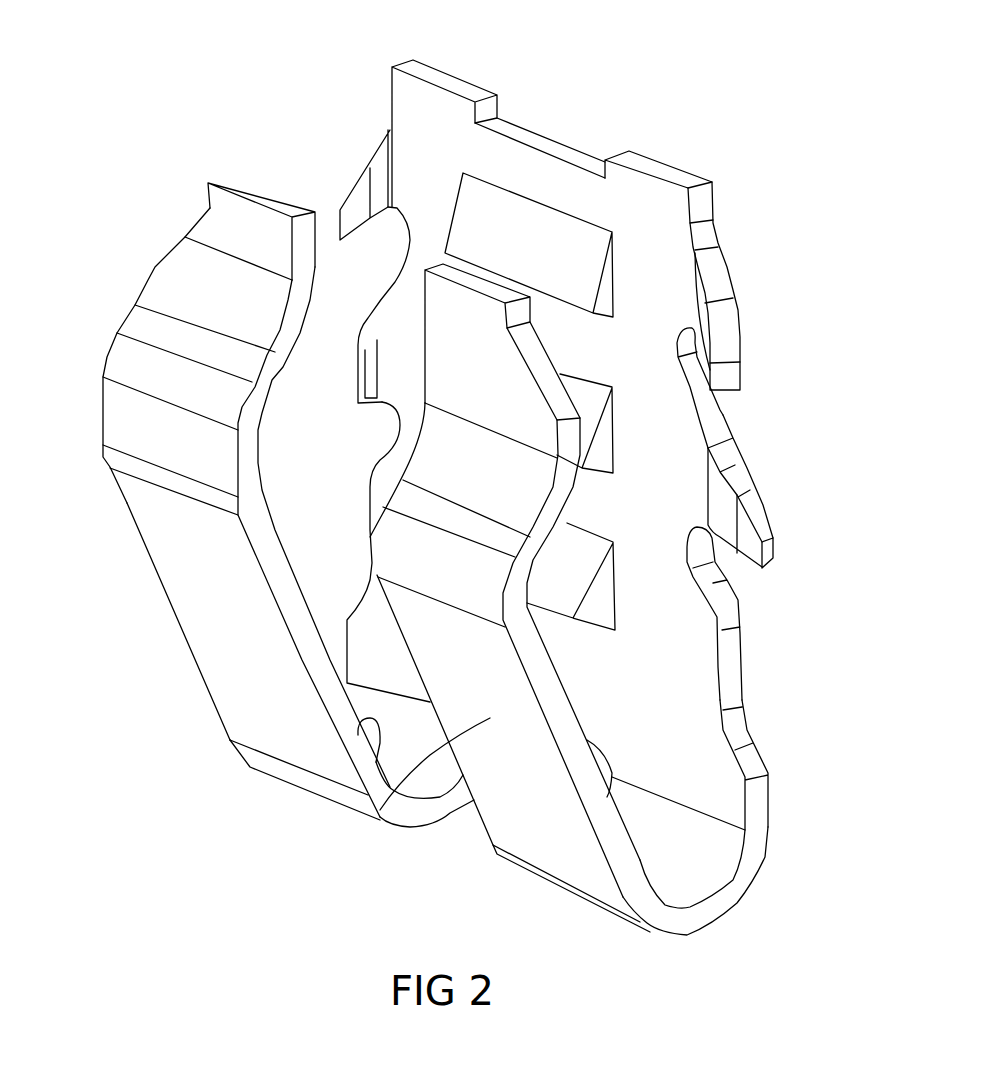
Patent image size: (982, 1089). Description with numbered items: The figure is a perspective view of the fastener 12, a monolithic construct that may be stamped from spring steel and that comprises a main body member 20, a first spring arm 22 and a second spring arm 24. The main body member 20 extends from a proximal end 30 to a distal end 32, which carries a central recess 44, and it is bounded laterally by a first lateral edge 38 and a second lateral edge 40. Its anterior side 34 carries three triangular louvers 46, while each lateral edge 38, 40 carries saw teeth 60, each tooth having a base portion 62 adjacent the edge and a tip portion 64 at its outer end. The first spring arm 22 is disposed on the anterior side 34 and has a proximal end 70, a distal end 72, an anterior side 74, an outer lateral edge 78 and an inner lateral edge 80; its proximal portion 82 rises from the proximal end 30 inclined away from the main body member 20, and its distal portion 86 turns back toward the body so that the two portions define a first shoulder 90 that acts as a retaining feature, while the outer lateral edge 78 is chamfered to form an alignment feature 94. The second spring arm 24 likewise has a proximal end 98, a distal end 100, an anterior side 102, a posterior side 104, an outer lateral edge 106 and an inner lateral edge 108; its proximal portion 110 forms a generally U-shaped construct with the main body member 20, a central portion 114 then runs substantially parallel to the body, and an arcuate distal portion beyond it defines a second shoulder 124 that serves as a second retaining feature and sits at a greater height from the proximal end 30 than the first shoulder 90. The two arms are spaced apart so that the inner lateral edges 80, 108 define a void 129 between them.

The fastener 12 is at (238, 97).
The main body member 20 is at (732, 203).
The first spring arm 22 is at (575, 850).
The second spring arm 24 is at (233, 625).
The proximal end 30 is at (690, 933).
The distal end 32 is at (660, 163).
The anterior side 34 is at (660, 623).
The first lateral edge 38 is at (733, 682).
The second lateral edge 40 is at (392, 82).
The recess 44 is at (583, 150).
The louvers 46 is at (607, 290).
The saw teeth 60 is at (350, 188).
The base portion 62 is at (727, 453).
The tip portion 64 is at (768, 548).
The proximal end 70 is at (683, 907).
The distal end 72 is at (480, 287).
The anterior side 74 is at (387, 810).
The outer lateral edge 78 is at (613, 842).
The inner lateral edge 80 is at (425, 305).
The proximal portion 82 is at (550, 786).
The distal portion 86 is at (443, 467).
The first shoulder 90 is at (420, 557).
The alignment feature 94 is at (580, 373).
The proximal end 98 is at (410, 813).
The distal end 100 is at (236, 185).
The anterior side 102 is at (193, 550).
The posterior side 104 is at (360, 770).
The outer lateral edge 106 is at (123, 503).
The inner lateral edge 108 is at (267, 538).
The proximal portion 110 is at (248, 698).
The central portion 114 is at (132, 423).
The second shoulder 124 is at (140, 363).
The void 129 is at (470, 813).